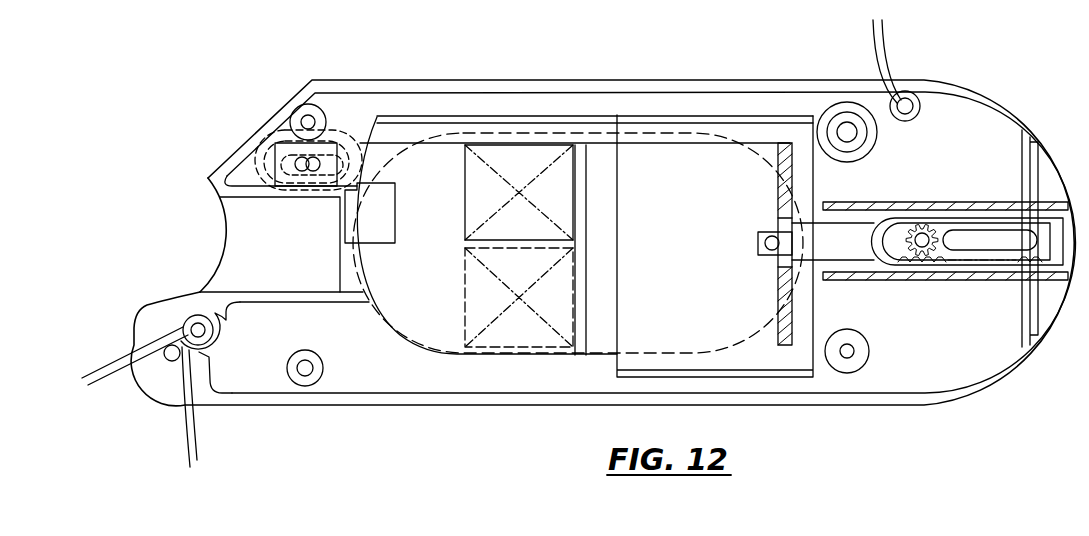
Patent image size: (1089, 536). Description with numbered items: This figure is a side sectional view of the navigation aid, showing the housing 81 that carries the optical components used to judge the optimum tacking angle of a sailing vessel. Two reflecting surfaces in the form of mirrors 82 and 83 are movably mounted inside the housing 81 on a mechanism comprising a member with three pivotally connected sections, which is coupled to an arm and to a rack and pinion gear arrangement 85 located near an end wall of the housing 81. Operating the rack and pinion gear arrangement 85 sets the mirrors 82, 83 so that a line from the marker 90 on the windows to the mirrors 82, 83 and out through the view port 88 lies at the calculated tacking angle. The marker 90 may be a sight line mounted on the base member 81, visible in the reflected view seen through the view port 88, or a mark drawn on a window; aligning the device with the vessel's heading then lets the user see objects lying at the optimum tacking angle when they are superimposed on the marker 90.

The housing 81 is at (1005, 377).
The mirror 82 is at (510, 160).
The mirror 83 is at (520, 337).
The rack and pinion gear arrangement 85 is at (940, 263).
The view port 88 is at (257, 252).
The marker 90 is at (618, 158).